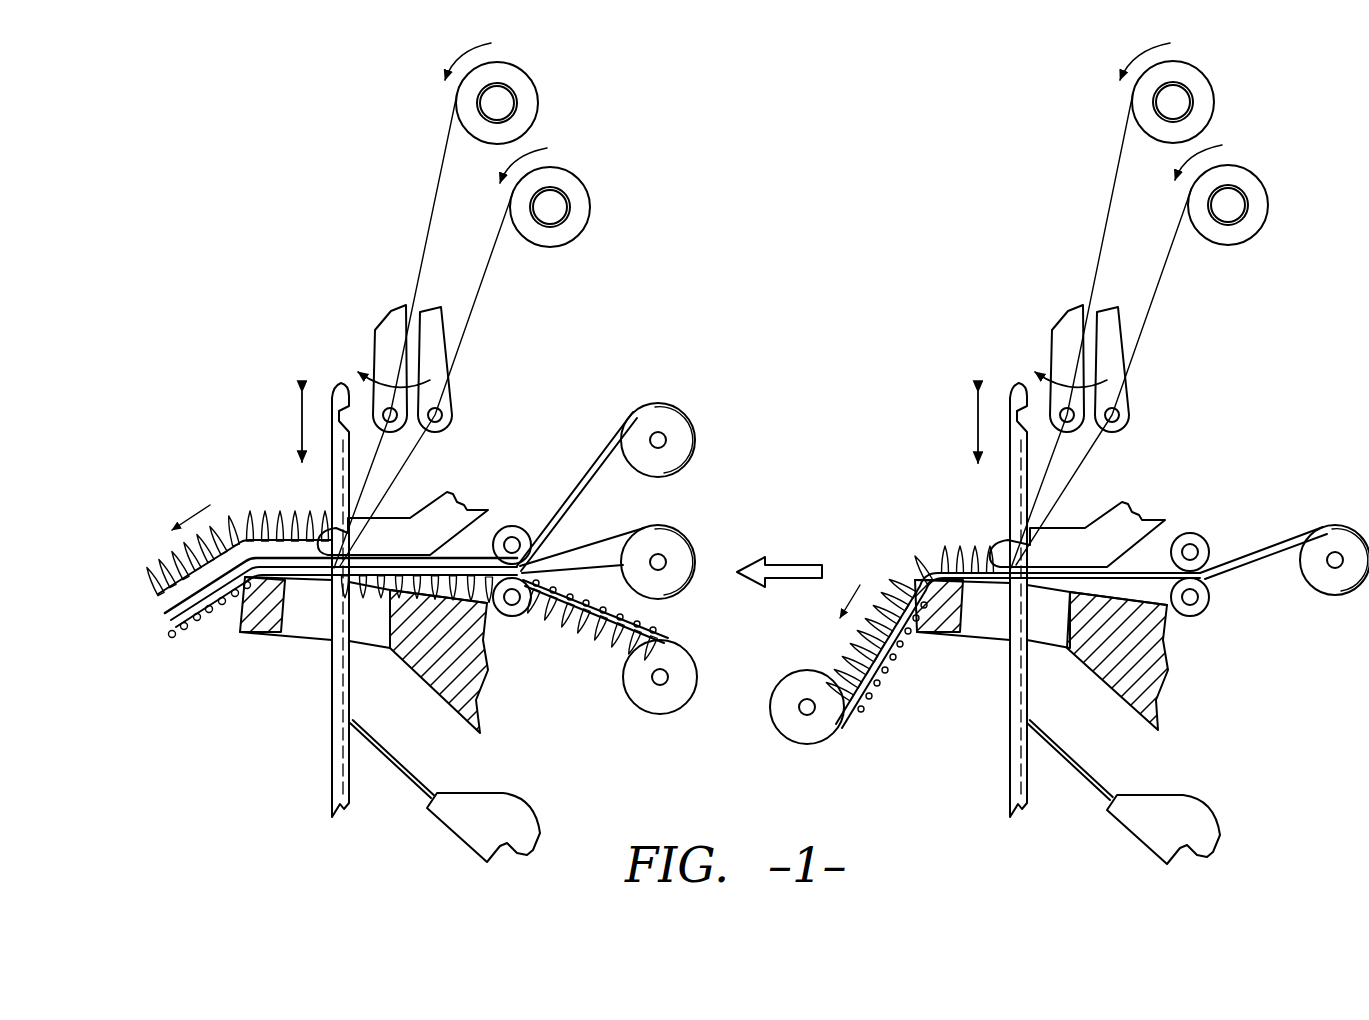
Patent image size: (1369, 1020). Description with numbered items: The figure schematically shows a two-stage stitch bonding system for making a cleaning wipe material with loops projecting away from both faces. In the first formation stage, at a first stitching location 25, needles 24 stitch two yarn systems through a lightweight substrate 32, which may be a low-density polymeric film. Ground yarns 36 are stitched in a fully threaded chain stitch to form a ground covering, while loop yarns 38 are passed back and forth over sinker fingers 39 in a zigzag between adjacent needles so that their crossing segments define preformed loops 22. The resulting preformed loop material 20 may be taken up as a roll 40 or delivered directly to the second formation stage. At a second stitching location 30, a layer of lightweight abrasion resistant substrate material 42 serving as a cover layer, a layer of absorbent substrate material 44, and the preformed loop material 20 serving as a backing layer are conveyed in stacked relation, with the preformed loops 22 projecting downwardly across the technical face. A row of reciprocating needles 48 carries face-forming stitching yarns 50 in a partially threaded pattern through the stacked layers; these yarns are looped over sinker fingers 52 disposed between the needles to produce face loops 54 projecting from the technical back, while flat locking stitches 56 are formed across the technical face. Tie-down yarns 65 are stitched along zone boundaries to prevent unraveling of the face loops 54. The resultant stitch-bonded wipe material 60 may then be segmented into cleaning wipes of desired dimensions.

The preformed loop material 20 is at (652, 622).
The preformed loops 22 is at (588, 638).
The needles 24 is at (1022, 386).
The first stitching location 25 is at (980, 356).
The second stitching location 30 is at (328, 332).
The lightweight substrate 32 is at (1265, 543).
The ground yarns 36 is at (1153, 298).
The loop yarns 38 is at (1108, 202).
The sinker fingers 39 is at (1122, 512).
The roll 40 is at (663, 715).
The lightweight abrasion resistant substrate material 42 is at (597, 457).
The absorbent substrate material 44 is at (598, 537).
The reciprocating needles 48 is at (342, 386).
The face-forming stitching yarns 50 is at (428, 213).
The sinker fingers 52 is at (447, 500).
The face loops 54 is at (237, 520).
The flat locking stitches 56 is at (202, 620).
The stitch-bonded wipe material 60 is at (145, 597).
The tie-down yarns 65 is at (478, 298).